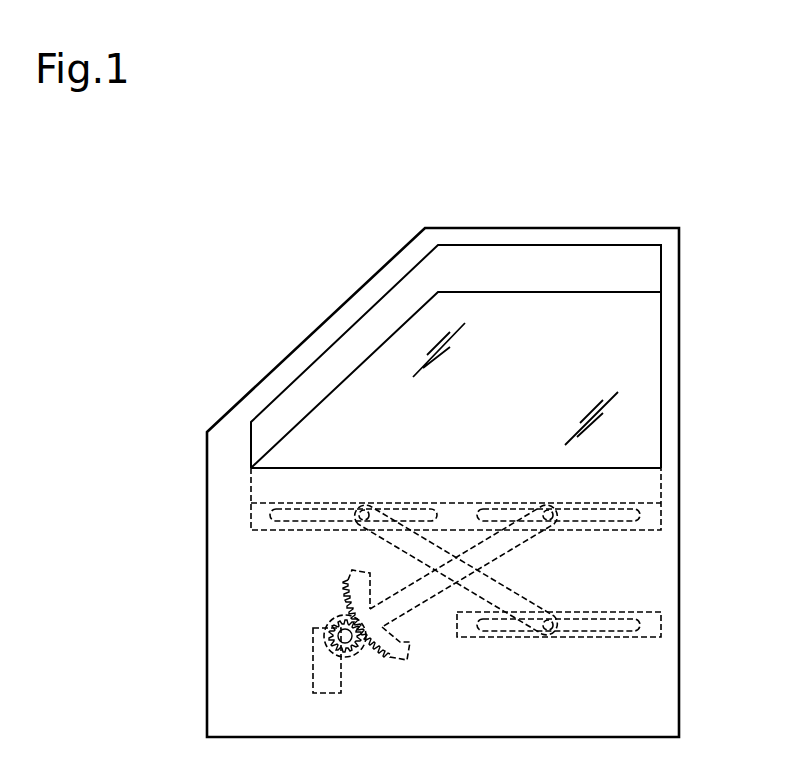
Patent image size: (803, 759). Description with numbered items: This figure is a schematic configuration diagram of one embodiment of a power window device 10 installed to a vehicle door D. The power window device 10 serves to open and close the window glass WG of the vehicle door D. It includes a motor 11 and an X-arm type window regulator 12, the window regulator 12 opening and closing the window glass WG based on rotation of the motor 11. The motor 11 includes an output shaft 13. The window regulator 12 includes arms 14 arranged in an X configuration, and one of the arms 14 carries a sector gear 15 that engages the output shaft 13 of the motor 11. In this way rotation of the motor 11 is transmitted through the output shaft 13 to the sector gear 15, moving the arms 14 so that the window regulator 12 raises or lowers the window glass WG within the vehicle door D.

The vehicle door D is at (679, 552).
The window glass WG is at (638, 352).
The power window device 10 is at (446, 596).
The motor 11 is at (312, 676).
The X-arm type window regulator 12 is at (480, 652).
The output shaft 13 is at (334, 616).
The arms 14 is at (423, 604).
The sector gear 15 is at (376, 661).